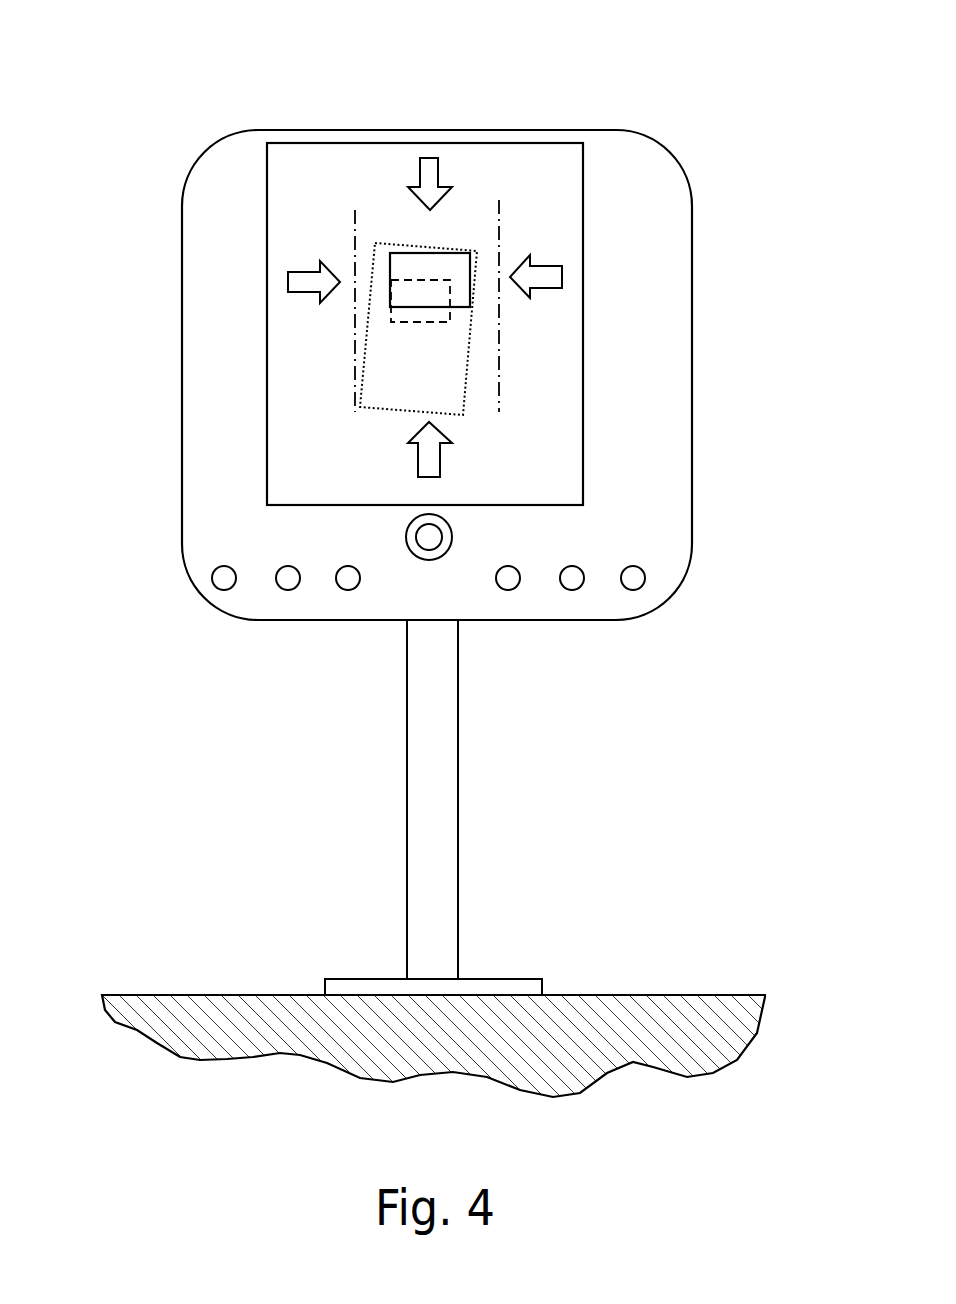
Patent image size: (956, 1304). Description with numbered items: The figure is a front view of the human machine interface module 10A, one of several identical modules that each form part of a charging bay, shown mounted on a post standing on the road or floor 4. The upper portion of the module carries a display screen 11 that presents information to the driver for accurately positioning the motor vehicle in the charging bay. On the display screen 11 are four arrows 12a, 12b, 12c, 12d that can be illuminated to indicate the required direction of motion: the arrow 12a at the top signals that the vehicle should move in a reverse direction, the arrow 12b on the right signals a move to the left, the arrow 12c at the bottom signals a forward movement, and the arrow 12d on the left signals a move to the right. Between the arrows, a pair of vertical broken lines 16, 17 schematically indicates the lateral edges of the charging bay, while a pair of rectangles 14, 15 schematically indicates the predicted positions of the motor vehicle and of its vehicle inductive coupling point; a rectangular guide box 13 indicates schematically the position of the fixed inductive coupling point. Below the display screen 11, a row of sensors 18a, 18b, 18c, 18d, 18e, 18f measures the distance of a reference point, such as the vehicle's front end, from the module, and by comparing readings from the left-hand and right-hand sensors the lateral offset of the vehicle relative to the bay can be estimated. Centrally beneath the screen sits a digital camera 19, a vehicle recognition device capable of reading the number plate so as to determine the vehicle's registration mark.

The road or floor 4 is at (133, 995).
The human machine interface module (HMIM) 10A is at (207, 151).
The display screen 11 is at (267, 210).
The arrow 12a is at (428, 158).
The arrow 12b is at (562, 275).
The arrow 12c is at (415, 466).
The arrow 12d is at (288, 282).
The displayed image frame 13 is at (418, 253).
The rectangle 14 is at (383, 248).
The rectangle 15 is at (448, 322).
The vertical broken line 16 is at (355, 363).
The vertical broken line 17 is at (499, 393).
The sensor 18a is at (228, 590).
The sensor 18b is at (292, 590).
The sensor 18c is at (352, 590).
The sensor 18d is at (506, 590).
The sensor 18e is at (570, 590).
The sensor 18f is at (631, 590).
The digital camera 19 is at (421, 559).